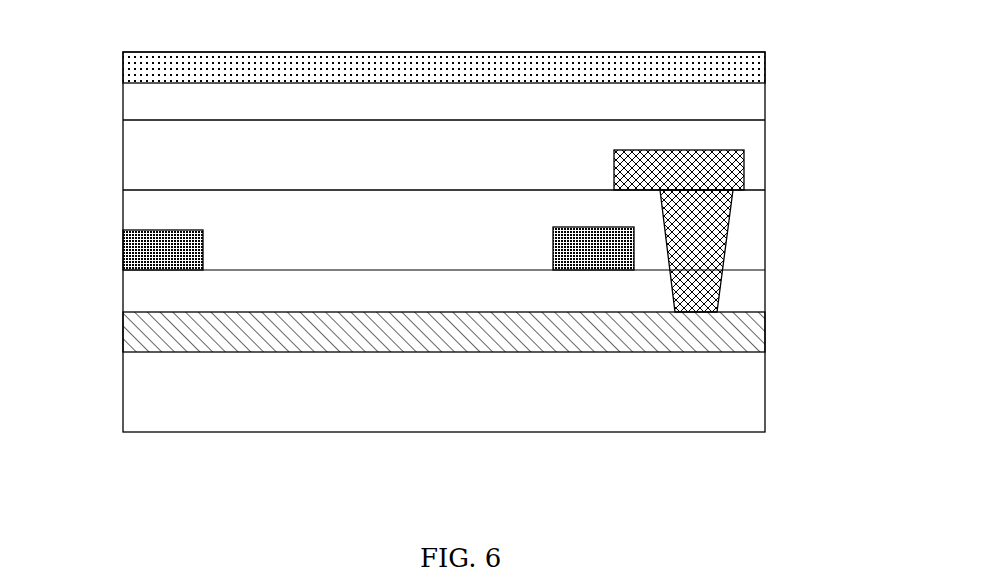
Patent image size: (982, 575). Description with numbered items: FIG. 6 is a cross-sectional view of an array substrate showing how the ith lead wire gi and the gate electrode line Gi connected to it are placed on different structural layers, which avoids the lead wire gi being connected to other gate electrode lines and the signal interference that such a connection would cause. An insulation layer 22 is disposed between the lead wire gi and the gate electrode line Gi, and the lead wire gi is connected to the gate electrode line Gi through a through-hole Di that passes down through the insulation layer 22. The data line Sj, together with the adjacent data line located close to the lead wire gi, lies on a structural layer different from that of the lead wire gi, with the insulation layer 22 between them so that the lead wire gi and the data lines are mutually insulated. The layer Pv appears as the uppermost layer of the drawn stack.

The pixel electrode / passivation layer Pv is at (416, 52).
The insulation layer 22 is at (160, 204).
The ith lead wire gi is at (685, 165).
The through-hole Di is at (710, 210).
The source line j Sj is at (150, 248).
The gate electrode line Gi is at (143, 330).